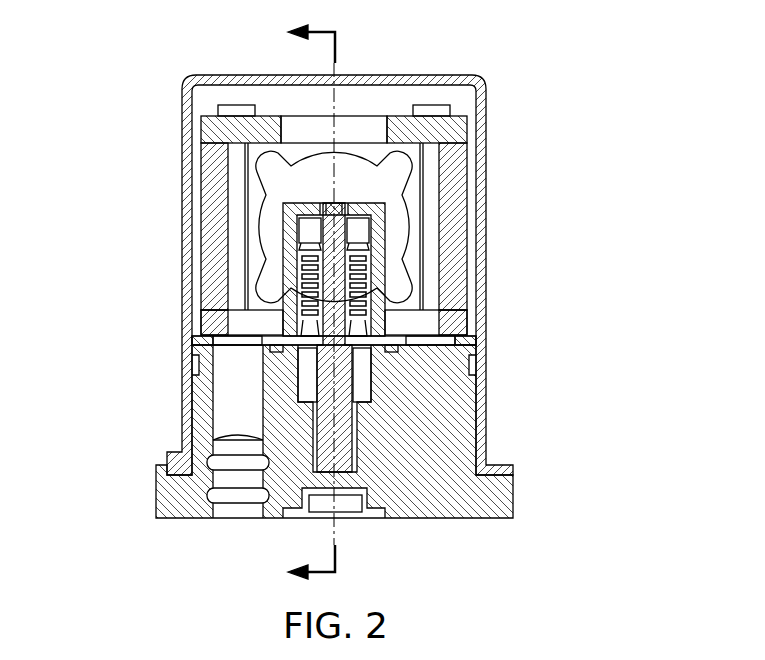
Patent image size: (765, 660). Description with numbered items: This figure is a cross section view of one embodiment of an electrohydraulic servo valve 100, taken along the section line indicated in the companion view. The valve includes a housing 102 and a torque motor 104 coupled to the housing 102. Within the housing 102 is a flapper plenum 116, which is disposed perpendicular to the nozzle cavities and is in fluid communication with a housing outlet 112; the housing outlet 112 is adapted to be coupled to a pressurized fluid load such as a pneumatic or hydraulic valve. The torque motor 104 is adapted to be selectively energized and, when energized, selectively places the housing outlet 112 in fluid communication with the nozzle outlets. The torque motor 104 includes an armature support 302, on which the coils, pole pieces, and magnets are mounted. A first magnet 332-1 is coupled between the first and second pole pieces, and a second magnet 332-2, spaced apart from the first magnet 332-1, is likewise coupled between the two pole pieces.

The electrohydraulic servo valve 100 is at (148, 103).
The housing 102 is at (506, 408).
The torque motor 104 is at (506, 190).
The housing outlet 112 is at (343, 507).
The flapper plenum 116 is at (365, 380).
The armature support 302 is at (366, 148).
The first magnet 332-1 is at (208, 240).
The second magnet 332-2 is at (460, 240).